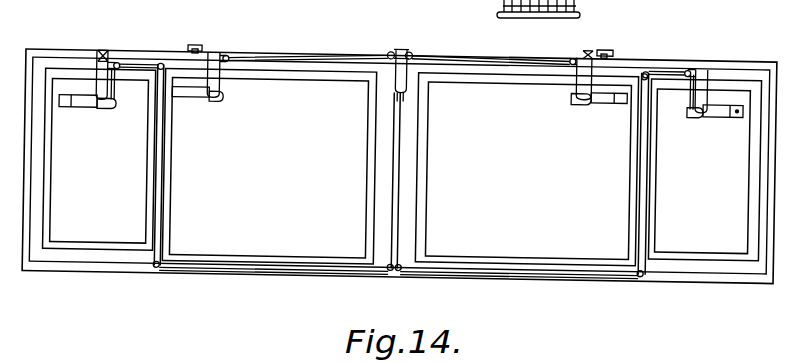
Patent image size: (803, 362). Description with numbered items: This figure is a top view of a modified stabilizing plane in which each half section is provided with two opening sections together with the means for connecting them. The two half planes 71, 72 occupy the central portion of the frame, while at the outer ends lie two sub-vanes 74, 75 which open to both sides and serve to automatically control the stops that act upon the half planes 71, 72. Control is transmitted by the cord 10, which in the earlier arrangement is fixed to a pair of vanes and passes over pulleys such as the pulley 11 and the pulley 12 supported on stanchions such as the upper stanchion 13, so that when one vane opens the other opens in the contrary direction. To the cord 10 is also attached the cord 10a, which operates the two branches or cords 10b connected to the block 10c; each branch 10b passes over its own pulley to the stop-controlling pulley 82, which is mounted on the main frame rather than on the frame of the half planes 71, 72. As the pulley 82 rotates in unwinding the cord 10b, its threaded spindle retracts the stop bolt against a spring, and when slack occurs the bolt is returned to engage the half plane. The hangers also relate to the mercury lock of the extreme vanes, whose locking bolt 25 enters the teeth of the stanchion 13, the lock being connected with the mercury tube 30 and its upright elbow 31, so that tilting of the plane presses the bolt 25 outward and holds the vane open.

The cord 10 is at (133, 55).
The cord 10a is at (401, 43).
The branches or cords 10b is at (282, 38).
The block 10c is at (395, 84).
The pulley 11 is at (113, 102).
The pulley 12 is at (697, 103).
The upper stanchion 13 is at (113, 50).
The locking bolt 25 is at (100, 48).
The mercury tube 30 is at (80, 107).
The elbow 31 is at (64, 107).
The half plane 71 is at (269, 166).
The half plane 72 is at (526, 169).
The sub-vane 74 is at (99, 159).
The sub-vane 75 is at (704, 170).
The stop-controlling pulley 82 is at (198, 41).